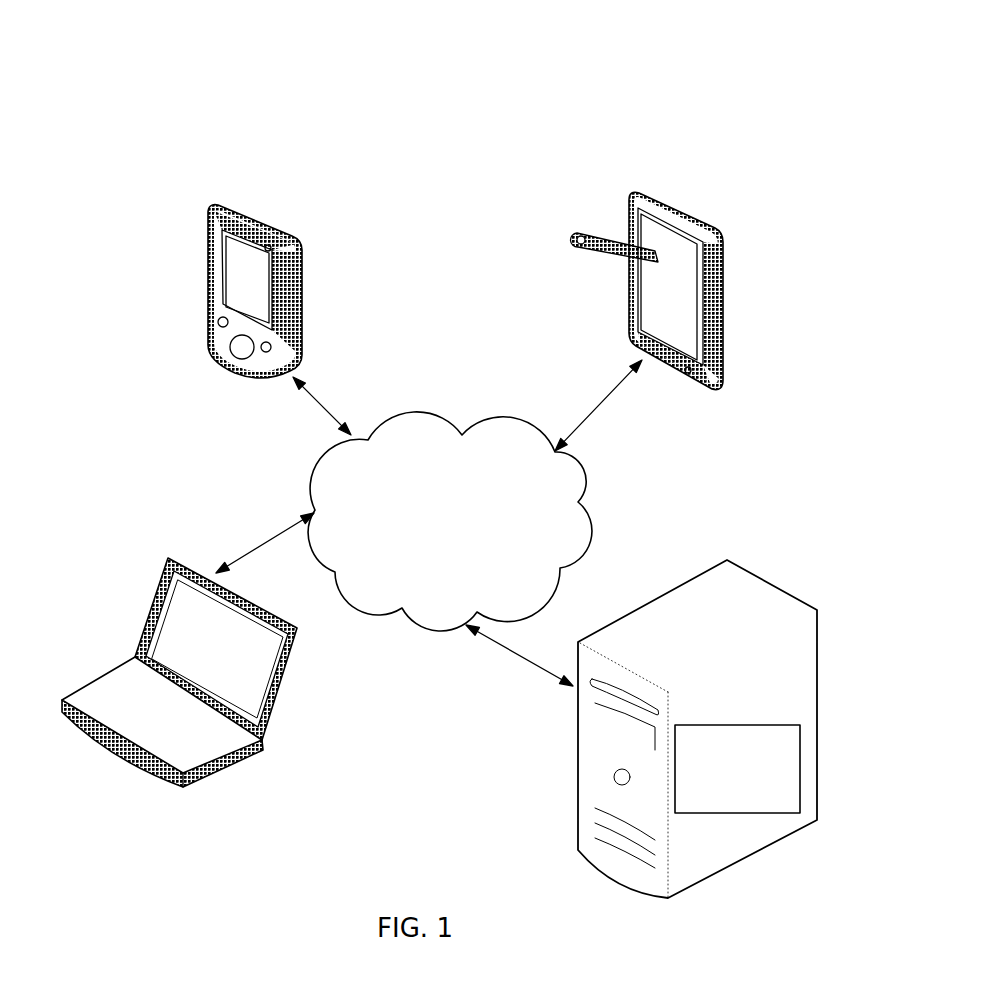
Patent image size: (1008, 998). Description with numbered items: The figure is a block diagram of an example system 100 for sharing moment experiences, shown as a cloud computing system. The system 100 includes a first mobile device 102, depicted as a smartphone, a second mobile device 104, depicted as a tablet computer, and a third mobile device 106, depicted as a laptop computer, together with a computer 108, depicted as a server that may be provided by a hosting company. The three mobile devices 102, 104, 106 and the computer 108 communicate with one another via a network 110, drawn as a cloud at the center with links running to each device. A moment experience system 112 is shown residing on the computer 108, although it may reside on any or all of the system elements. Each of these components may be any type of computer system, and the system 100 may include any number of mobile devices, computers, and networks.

The system 100 is at (446, 125).
The first mobile device 102 is at (228, 198).
The second mobile device 104 is at (638, 185).
The third mobile device 106 is at (152, 605).
The computer 108 is at (735, 572).
The network 110 is at (450, 521).
The moment experience system 112 is at (797, 787).